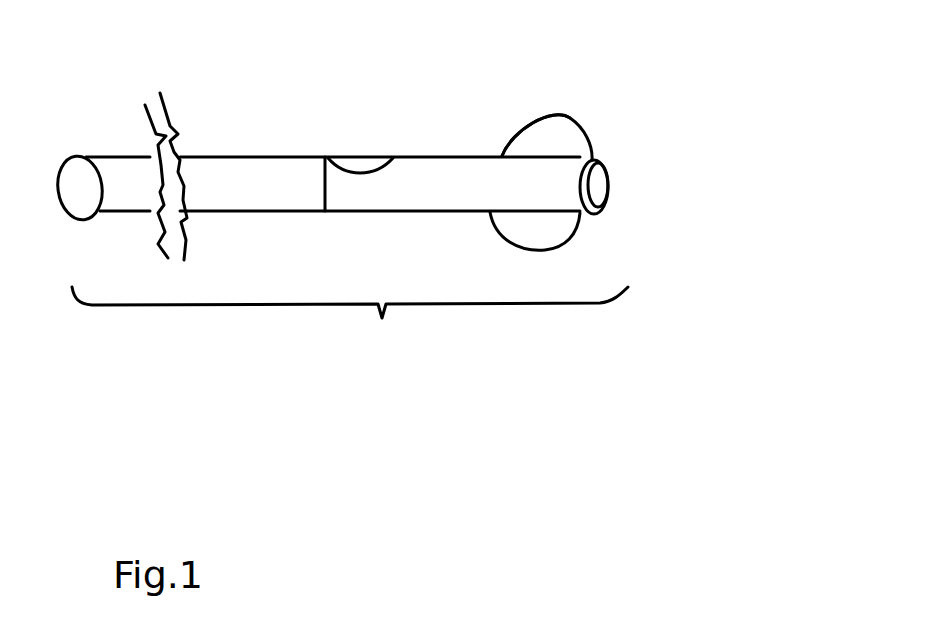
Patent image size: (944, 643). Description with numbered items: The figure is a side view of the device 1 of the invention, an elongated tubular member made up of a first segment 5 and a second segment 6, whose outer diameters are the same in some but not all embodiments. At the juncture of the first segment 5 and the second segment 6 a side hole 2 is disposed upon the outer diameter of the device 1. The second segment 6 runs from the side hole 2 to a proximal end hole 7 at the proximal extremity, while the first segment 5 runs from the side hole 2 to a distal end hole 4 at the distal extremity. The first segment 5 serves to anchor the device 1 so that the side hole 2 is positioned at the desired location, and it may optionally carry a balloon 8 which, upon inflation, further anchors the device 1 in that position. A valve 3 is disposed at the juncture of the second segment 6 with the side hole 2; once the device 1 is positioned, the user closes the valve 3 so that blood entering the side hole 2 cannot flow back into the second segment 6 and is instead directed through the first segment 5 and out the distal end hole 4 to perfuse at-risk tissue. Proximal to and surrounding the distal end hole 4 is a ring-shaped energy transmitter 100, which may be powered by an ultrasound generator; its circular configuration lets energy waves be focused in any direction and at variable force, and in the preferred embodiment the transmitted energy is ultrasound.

The device 1 is at (350, 327).
The side hole 2 is at (367, 160).
The valve 3 is at (317, 193).
The distal end hole 4 is at (605, 172).
The first segment 5 is at (490, 157).
The second segment 6 is at (120, 155).
The proximal end hole 7 is at (72, 192).
The balloon 8 is at (585, 112).
The energy transmitter 100 is at (610, 190).